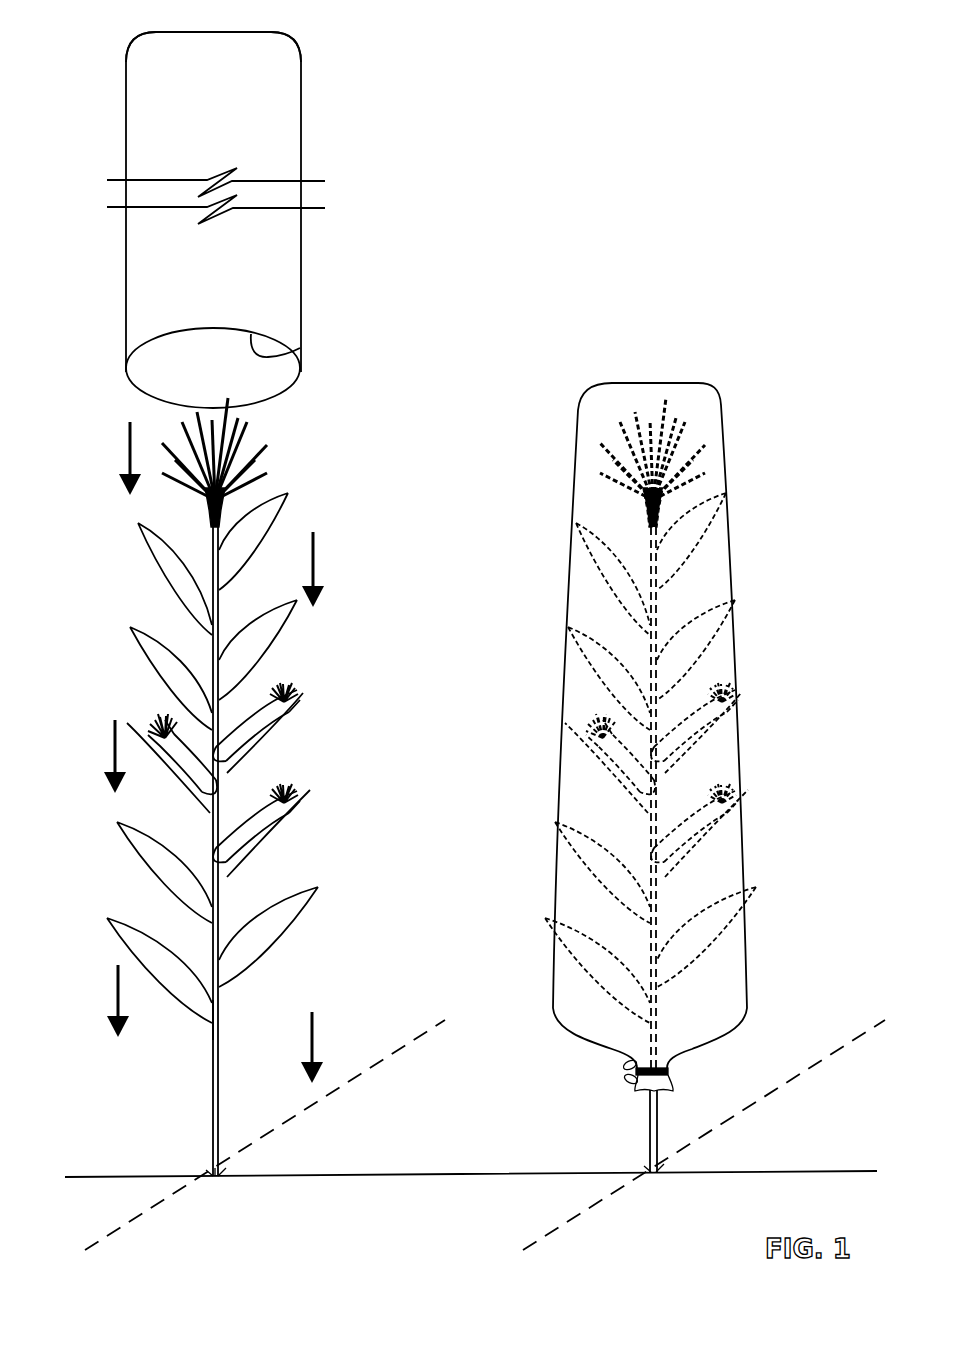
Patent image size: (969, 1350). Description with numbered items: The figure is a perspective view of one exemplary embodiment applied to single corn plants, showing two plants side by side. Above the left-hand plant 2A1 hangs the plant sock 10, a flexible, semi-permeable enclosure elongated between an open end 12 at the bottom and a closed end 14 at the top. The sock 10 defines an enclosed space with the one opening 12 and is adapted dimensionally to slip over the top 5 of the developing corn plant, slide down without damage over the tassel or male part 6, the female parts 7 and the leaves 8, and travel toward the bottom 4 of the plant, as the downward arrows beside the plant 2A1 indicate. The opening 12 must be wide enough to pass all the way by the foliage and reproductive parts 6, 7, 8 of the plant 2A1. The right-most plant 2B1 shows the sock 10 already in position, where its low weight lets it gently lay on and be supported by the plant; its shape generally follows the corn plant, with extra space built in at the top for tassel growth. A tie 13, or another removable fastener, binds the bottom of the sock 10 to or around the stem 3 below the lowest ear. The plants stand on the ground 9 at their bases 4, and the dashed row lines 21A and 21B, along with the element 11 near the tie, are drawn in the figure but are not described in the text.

The closed end 14 is at (262, 63).
The plant sock 10 is at (272, 258).
The open end 12 is at (270, 357).
The top of corn plant 5 is at (240, 407).
The tassel 6 is at (240, 472).
The female parts 7 is at (278, 790).
The leaves 8 is at (143, 945).
The left-hand plant 2A1 is at (228, 911).
The stem 3 is at (222, 1022).
The ground 9 is at (150, 1176).
The bottom of plant 4 is at (225, 1172).
The row 21A is at (162, 1200).
The tie 11 is at (637, 1095).
The tie 13 is at (672, 1068).
The right-most plant 2B1 is at (647, 1141).
The row 21B is at (583, 1212).